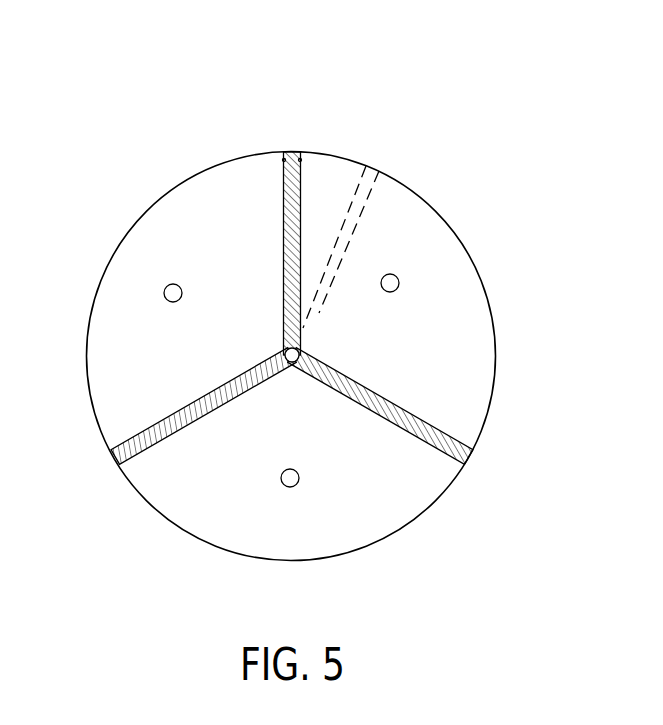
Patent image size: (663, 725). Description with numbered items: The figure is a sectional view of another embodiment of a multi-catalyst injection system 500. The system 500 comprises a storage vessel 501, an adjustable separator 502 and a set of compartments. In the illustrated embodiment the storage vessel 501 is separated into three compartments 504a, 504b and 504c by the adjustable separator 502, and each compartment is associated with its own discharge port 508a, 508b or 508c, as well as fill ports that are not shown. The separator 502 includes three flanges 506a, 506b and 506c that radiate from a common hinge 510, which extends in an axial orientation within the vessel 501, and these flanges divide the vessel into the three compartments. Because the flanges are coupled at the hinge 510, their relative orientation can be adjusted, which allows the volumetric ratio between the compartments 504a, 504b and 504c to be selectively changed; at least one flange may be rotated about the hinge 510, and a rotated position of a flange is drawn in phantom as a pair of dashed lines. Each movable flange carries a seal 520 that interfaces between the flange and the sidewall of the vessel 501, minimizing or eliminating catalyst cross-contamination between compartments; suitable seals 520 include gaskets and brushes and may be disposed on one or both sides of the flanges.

The multi-catalyst injection system 500 is at (189, 108).
The storage vessel 501 is at (255, 153).
The adjustable separator 502 is at (268, 166).
The compartment 504a is at (212, 258).
The compartment 504b is at (462, 333).
The compartment 504c is at (390, 489).
The flange 506a is at (300, 152).
The flange 506b is at (424, 421).
The flange 506c is at (172, 436).
The discharge port 508a is at (171, 302).
The discharge port 508b is at (396, 276).
The discharge port 508c is at (291, 480).
The hinge 510 is at (287, 350).
The seal 520 is at (322, 166).